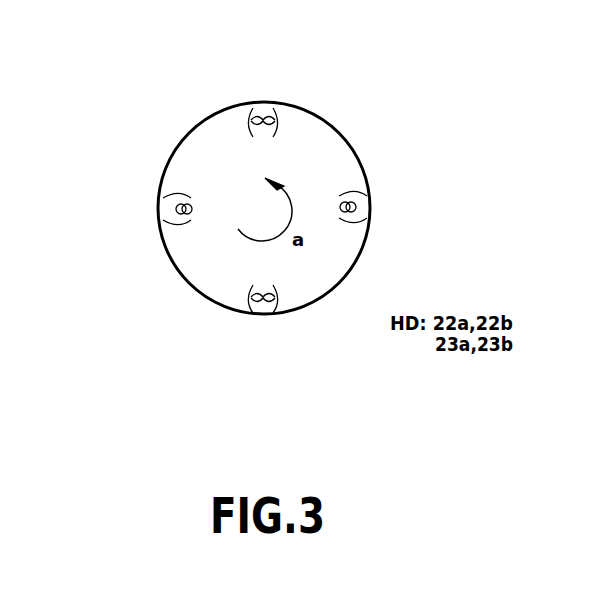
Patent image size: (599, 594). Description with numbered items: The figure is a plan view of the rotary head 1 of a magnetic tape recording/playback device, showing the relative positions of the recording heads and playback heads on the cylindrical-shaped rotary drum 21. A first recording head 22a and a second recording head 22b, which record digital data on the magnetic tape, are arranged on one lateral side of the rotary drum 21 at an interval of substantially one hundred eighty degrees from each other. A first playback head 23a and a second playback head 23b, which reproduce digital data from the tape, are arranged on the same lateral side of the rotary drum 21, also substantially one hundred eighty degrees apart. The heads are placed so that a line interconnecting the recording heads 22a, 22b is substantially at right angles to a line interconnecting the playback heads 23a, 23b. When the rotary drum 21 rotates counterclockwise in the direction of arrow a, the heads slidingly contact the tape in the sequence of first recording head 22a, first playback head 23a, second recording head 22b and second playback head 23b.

The rotary head 1 is at (388, 5).
The rotary drum 21 is at (360, 130).
The first recording head 22a is at (262, 316).
The second recording head 22b is at (264, 106).
The first playback head 23a is at (162, 210).
The second playback head 23b is at (364, 205).